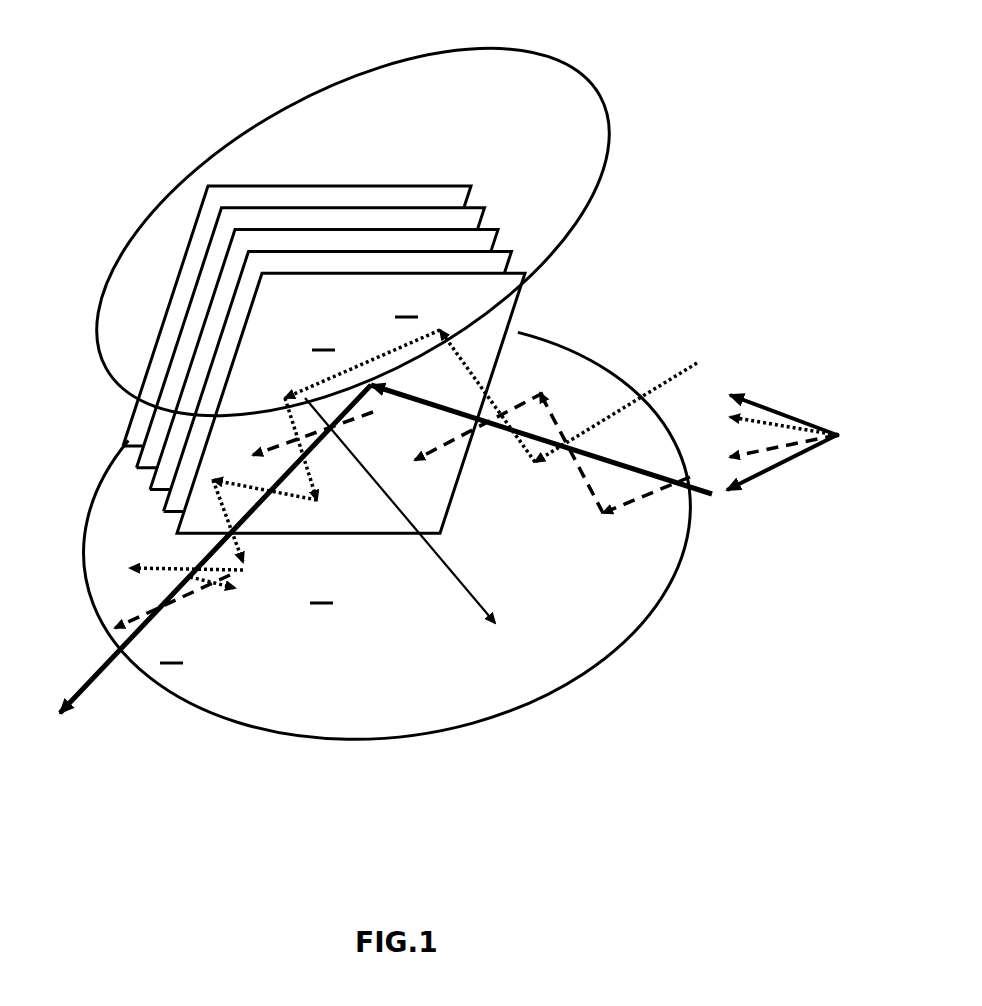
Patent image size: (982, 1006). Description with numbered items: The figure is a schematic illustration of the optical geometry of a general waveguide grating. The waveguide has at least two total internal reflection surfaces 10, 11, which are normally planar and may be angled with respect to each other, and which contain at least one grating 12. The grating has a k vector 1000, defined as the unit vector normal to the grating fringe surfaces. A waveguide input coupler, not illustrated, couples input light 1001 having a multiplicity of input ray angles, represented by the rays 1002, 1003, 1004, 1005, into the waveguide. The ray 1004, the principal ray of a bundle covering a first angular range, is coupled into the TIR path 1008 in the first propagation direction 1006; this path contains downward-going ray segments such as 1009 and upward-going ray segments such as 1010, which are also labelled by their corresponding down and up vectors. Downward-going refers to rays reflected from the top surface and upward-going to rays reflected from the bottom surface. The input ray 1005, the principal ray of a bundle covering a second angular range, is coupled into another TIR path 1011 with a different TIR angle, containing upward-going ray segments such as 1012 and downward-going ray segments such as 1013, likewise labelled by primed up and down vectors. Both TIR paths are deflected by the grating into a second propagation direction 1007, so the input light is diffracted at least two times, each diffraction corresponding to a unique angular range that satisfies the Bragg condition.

The total internal reflection surface 10 is at (610, 157).
The total internal reflection surface 11 is at (338, 740).
The grating 12 is at (182, 270).
The k vector 1000 is at (440, 557).
The input light 1001 is at (817, 332).
The input ray 1002 is at (745, 392).
The input ray 1003 is at (820, 445).
The input ray 1004 is at (772, 418).
The input ray 1005 is at (772, 450).
The first propagation direction 1006 is at (610, 463).
The second propagation direction 1007 is at (112, 662).
The TIR path 1008 is at (597, 420).
The downward-going ray segment 1009 is at (430, 287).
The upward-going ray segment 1010 is at (290, 397).
The TIR path 1011 is at (665, 483).
The upward-going ray segment 1012 is at (305, 603).
The downward-going ray segment 1013 is at (195, 672).